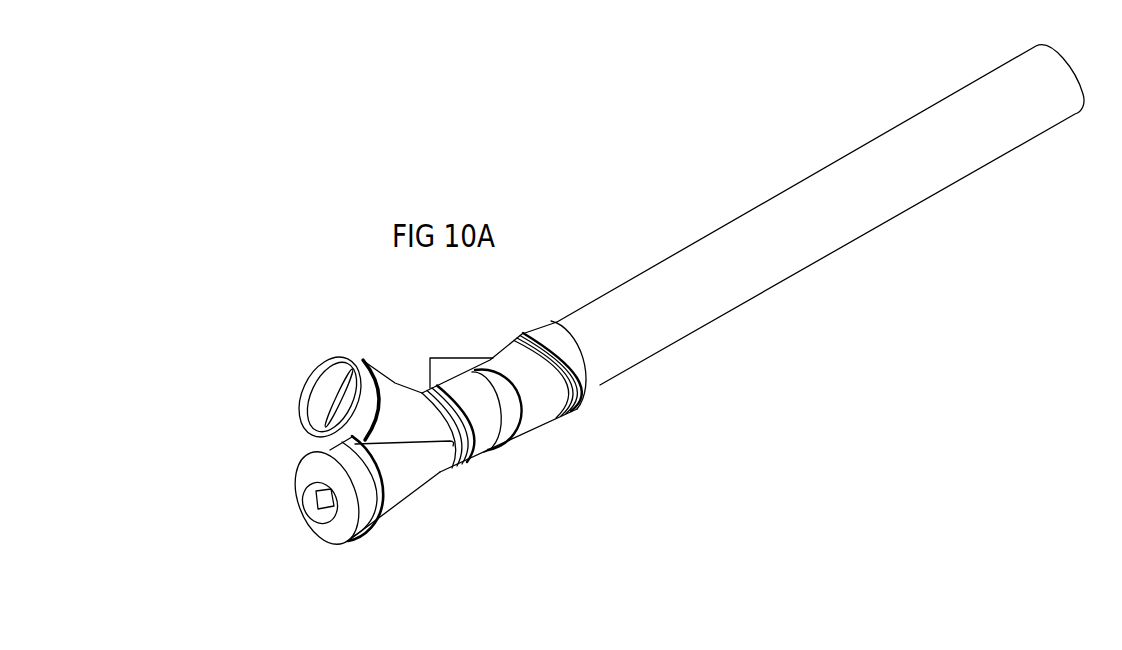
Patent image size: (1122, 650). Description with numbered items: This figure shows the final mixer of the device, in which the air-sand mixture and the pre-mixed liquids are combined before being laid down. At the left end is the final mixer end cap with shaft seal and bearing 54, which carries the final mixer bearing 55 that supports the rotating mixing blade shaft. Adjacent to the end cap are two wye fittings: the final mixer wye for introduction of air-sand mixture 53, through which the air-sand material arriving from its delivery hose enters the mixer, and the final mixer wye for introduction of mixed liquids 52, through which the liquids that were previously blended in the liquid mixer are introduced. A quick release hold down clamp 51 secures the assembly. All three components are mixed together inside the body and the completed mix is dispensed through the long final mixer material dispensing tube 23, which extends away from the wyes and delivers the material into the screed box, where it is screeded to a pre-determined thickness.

The final mixer material dispensing tube 23 is at (758, 261).
The liquid mixer quick release hold down clamp 51 is at (577, 410).
The final mixer wye for introduction of mixed liquids 52 is at (408, 465).
The final mixer wye for introduction of air-sand mixture 53 is at (348, 523).
The final mixer end cap with shaft seal and bearing 54 is at (333, 507).
The final mixer bearing 55 is at (318, 507).